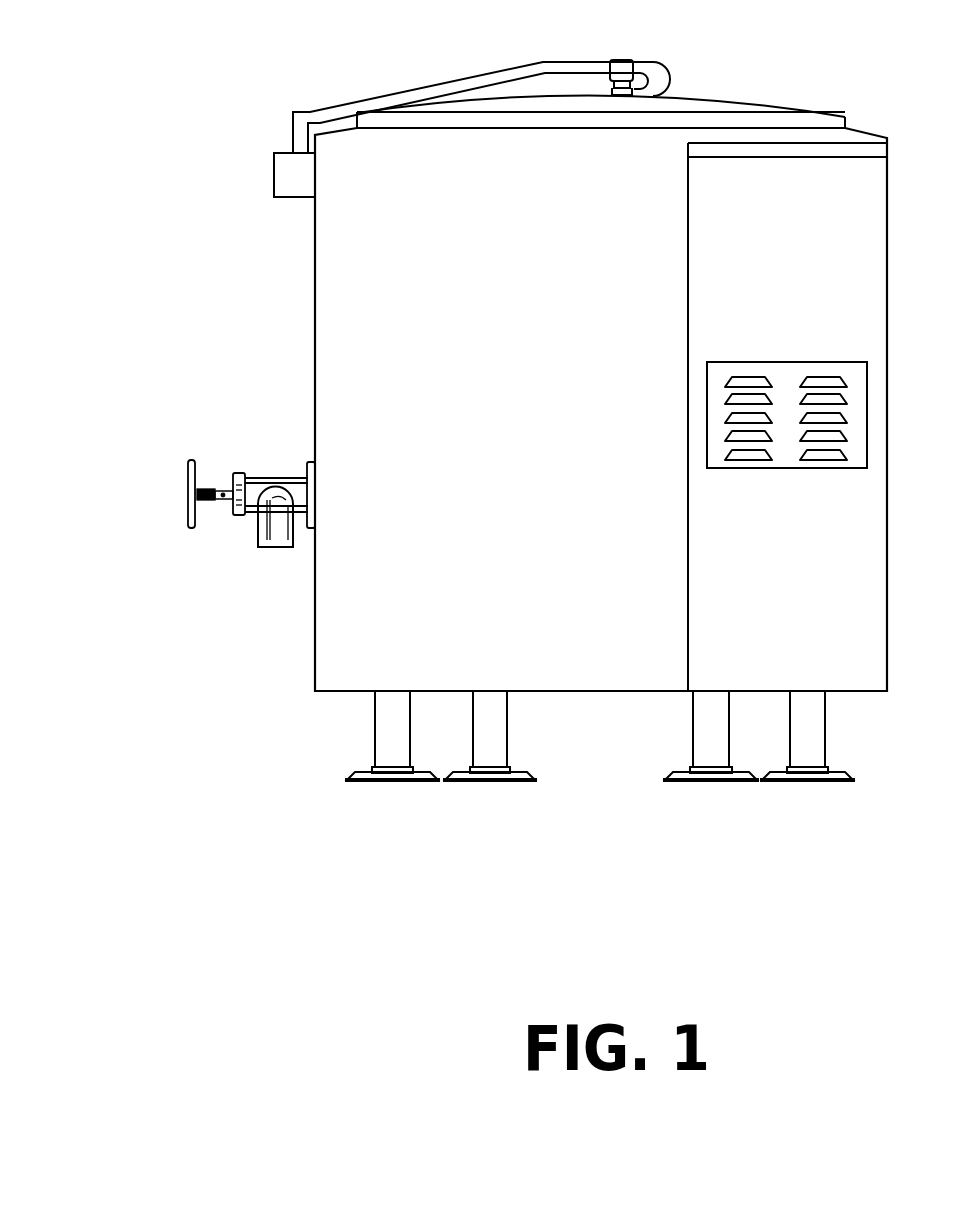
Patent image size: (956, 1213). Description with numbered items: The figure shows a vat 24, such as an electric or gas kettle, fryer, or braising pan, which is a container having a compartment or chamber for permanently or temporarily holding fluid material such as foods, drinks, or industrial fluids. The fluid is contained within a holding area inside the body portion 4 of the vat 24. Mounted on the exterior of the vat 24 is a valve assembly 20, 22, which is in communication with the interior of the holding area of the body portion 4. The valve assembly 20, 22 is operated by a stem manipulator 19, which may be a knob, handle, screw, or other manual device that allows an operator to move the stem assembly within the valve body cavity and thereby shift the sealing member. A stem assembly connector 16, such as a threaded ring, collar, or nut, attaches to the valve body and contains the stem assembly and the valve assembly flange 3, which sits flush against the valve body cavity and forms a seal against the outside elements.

The vat 24 is at (182, 82).
The body portion 4 is at (542, 442).
The valve assembly 20 is at (313, 447).
The valve assembly 22 is at (313, 447).
The stem manipulator 19 is at (187, 518).
The stem assembly connector 16 is at (238, 514).
The valve assembly flange 3 is at (277, 540).